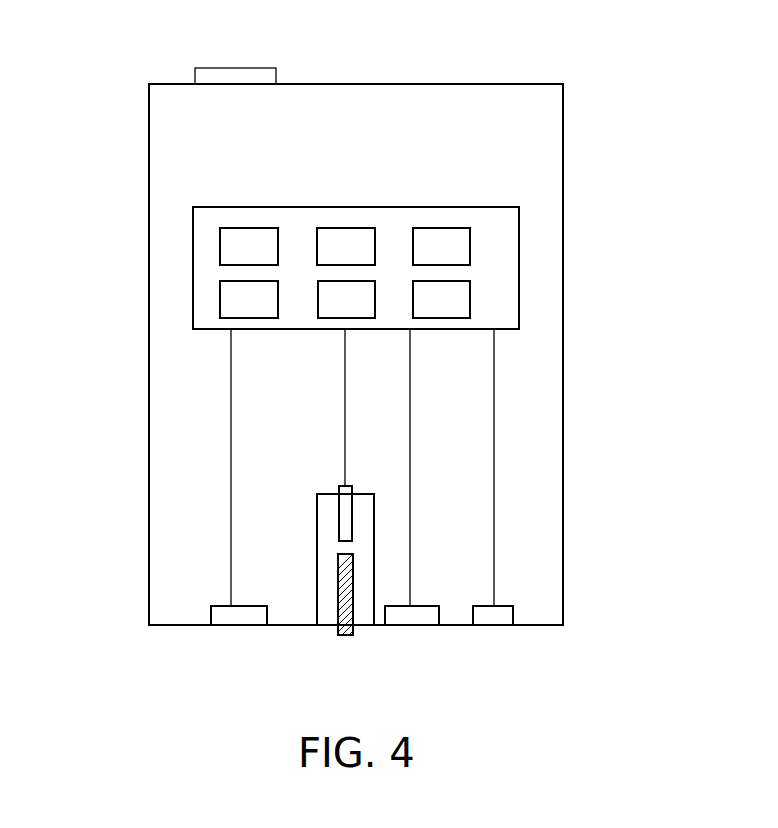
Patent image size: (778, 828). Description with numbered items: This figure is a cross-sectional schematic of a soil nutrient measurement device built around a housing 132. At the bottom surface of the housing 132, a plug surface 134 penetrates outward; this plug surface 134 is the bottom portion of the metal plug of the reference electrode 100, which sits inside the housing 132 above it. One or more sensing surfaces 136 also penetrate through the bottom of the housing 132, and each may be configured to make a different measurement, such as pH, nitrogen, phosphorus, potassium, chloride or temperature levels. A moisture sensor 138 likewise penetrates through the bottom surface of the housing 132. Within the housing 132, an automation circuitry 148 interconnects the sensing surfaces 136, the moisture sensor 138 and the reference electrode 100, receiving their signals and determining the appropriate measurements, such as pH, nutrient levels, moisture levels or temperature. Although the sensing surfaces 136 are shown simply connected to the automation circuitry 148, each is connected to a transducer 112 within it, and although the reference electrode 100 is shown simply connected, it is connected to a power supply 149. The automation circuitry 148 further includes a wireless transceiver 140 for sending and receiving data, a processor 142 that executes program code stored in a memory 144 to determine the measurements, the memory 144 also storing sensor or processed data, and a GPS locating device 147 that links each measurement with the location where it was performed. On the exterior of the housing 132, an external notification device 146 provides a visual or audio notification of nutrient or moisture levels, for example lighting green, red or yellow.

The reference electrode 100 is at (375, 575).
The transducer 112 is at (237, 245).
The housing 132 is at (563, 218).
The plug surface 134 is at (345, 637).
The sensing surfaces 136 is at (225, 628).
The moisture sensor 138 is at (497, 628).
The wireless transceiver 140 is at (335, 238).
The processor 142 is at (453, 251).
The memory 144 is at (450, 300).
The external notification device 146 is at (238, 68).
The GPS locating device 147 is at (347, 302).
The automation circuitry 148 is at (519, 285).
The power supply 149 is at (240, 300).